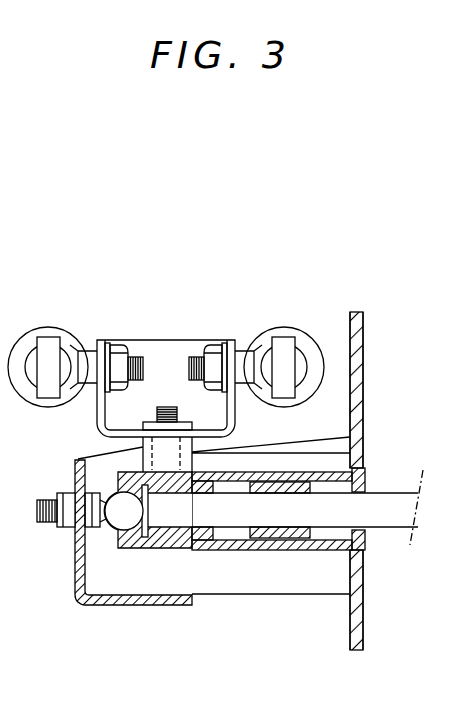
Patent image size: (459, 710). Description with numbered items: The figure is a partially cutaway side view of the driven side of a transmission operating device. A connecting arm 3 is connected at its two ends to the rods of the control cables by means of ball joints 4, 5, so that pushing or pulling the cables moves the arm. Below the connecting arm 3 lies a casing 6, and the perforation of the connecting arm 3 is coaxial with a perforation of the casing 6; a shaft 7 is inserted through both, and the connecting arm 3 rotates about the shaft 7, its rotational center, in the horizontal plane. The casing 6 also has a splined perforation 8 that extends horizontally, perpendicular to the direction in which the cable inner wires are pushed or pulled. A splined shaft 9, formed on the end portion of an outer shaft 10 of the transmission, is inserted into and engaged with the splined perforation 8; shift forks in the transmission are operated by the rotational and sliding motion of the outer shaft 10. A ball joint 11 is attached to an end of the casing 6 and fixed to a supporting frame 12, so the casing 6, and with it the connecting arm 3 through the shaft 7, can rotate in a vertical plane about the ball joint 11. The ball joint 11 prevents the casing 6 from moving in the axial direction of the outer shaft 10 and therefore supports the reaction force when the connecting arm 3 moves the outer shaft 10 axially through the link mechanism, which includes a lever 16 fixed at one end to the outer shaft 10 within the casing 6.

The connecting arm 3 is at (166, 371).
The ball joint 4 is at (256, 338).
The ball joint 5 is at (75, 338).
The casing 6 is at (278, 574).
The shaft 7 is at (182, 515).
The splined perforation 8 is at (148, 576).
The splined shaft 9 is at (199, 586).
The outer shaft 10 is at (345, 475).
The ball joint 11 is at (75, 558).
The supporting frame 12 is at (128, 570).
The lever 16 is at (282, 581).